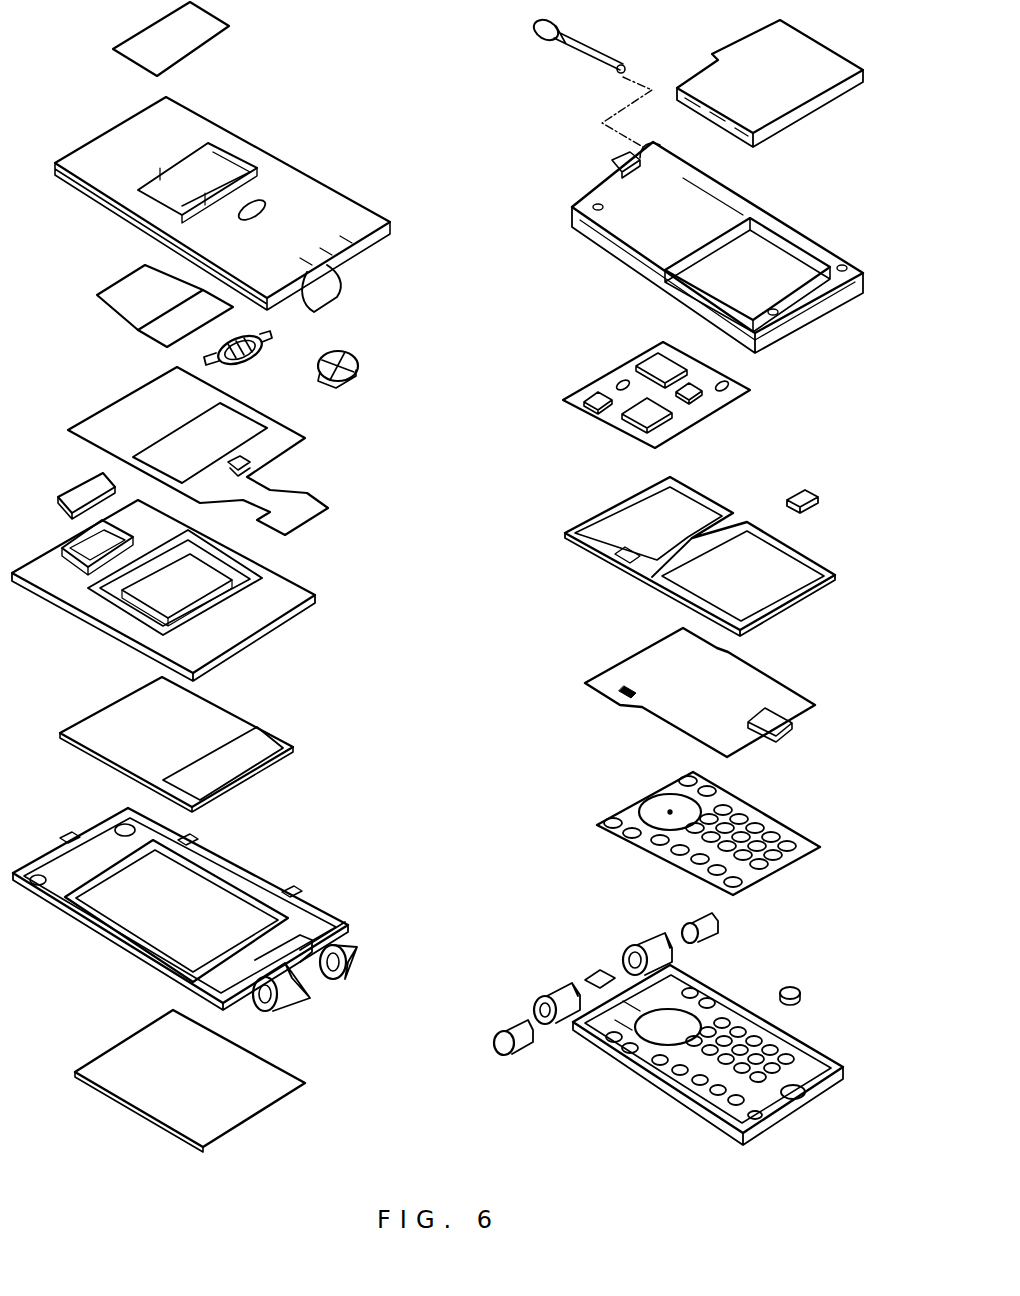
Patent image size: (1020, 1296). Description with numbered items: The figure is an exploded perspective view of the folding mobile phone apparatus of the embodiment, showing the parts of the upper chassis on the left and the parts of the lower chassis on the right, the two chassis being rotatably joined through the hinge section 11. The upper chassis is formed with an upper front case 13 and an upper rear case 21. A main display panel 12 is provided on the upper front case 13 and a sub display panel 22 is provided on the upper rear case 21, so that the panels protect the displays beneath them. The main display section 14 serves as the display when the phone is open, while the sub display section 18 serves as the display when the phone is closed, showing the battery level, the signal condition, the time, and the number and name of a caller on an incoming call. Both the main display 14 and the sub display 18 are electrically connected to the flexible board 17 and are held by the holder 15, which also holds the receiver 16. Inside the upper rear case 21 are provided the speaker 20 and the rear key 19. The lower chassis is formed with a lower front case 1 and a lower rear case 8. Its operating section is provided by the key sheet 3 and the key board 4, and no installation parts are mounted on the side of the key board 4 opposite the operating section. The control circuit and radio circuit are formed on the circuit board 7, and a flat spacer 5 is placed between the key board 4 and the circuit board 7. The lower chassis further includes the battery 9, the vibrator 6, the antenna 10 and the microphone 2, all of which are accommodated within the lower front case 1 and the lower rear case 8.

The lower front case 1 is at (809, 1037).
The microphone 2 is at (804, 985).
The key sheet 3 is at (809, 833).
The key board 4 is at (796, 692).
The flat spacer 5 is at (821, 560).
The vibrator 6 is at (792, 493).
The circuit board 7 is at (611, 361).
The lower rear case 8 is at (759, 203).
The battery 9 is at (841, 56).
The antenna 10 is at (657, 32).
The hinge section 11 is at (511, 1019).
The main display panel 12 is at (289, 1101).
The upper front case 13 is at (313, 903).
The main display section 14 is at (266, 776).
The holder 15 is at (273, 636).
The receiver 16 is at (78, 478).
The flexible board 17 is at (316, 524).
The sub display section 18 is at (147, 339).
The rear key 19 is at (243, 365).
The speaker 20 is at (353, 384).
The upper rear case 21 is at (338, 186).
The sub display panel 22 is at (207, 53).